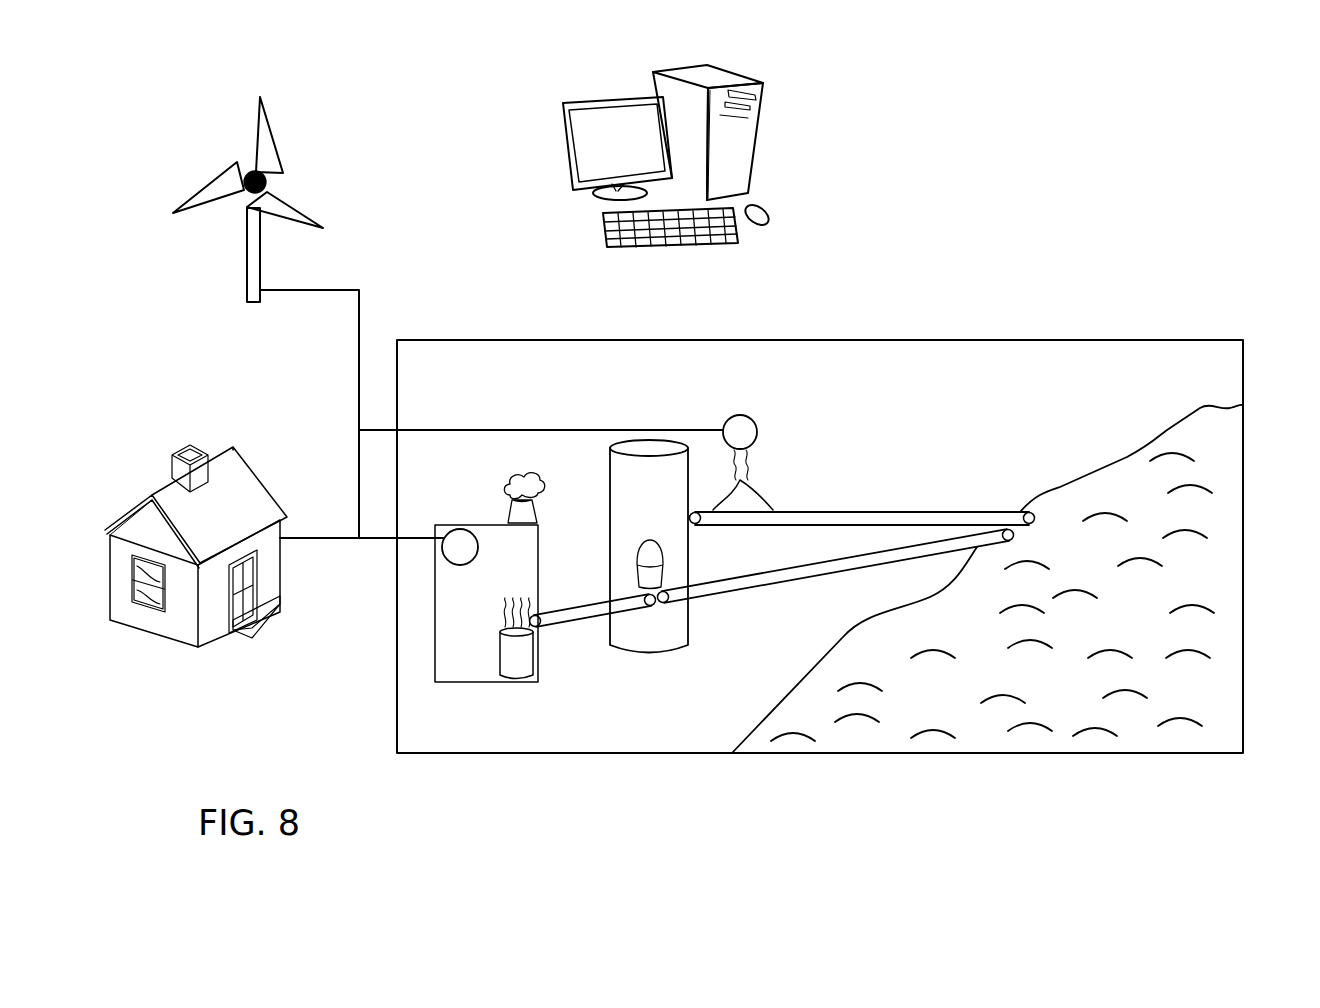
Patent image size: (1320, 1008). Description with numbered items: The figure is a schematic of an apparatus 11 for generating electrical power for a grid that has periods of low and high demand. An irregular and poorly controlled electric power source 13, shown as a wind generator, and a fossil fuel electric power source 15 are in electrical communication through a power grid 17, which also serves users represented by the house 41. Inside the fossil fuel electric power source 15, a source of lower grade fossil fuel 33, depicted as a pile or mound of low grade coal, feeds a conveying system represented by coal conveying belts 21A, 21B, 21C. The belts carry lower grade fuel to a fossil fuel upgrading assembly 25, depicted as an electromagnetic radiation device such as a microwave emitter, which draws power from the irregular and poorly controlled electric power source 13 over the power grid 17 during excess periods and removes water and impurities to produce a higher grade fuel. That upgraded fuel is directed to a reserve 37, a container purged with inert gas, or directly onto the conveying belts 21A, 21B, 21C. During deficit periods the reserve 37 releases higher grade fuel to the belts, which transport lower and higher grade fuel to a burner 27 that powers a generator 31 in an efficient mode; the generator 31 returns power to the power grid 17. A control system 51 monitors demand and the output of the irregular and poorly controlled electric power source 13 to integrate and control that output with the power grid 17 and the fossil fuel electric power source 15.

The apparatus 11 is at (957, 182).
The irregular and poorly controlled electric power source 13 is at (272, 138).
The fossil fuel electric power source 15 is at (1147, 340).
The power grid 17 is at (359, 358).
The coal conveying belt 21A is at (583, 622).
The coal conveying belt 21B is at (788, 583).
The coal conveying belt 21C is at (910, 511).
The fossil fuel upgrading assembly 25 is at (758, 428).
The burner 27 is at (517, 676).
The generator 31 is at (458, 529).
The source of lower grade fossil fuel 33 is at (1238, 445).
The reserve 37 is at (641, 442).
The house 41 is at (245, 448).
The control system 51 is at (568, 145).